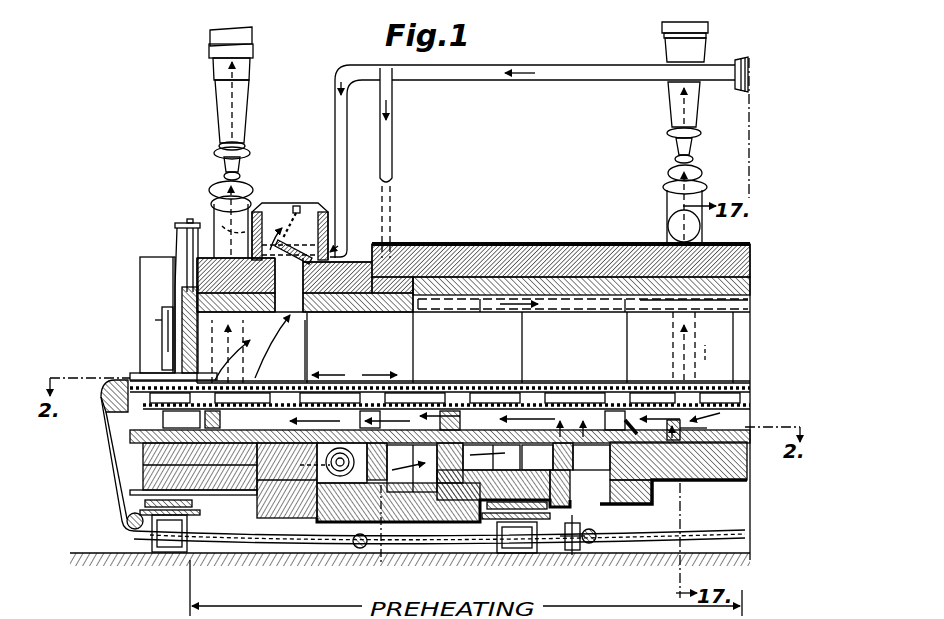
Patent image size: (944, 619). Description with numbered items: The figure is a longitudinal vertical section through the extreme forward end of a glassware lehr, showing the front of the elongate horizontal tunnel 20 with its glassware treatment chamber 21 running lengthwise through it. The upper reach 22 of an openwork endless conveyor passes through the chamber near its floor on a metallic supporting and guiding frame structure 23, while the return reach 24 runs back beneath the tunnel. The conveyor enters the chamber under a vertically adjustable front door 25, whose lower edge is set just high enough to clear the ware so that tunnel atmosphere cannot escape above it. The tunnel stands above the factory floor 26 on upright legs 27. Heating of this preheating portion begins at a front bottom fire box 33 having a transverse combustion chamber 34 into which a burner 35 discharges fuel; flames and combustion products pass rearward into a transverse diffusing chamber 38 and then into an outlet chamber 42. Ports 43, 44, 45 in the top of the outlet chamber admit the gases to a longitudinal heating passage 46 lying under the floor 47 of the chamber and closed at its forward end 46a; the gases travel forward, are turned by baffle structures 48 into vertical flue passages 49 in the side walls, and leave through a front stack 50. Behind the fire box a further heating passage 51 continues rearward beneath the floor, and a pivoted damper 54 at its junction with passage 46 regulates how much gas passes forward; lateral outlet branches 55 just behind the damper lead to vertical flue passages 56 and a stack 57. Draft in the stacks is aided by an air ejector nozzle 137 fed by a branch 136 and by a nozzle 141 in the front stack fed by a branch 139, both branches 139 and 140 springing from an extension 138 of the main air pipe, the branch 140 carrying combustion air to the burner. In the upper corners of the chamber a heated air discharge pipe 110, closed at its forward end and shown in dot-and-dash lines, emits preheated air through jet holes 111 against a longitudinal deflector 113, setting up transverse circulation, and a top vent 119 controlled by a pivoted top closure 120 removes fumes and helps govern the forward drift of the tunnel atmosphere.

The tunnel 20 is at (487, 243).
The glassware treatment chamber 21 is at (520, 330).
The upper reach of the conveyor 22 is at (307, 378).
The conveyor supporting and guiding frame structure 23 is at (440, 392).
The return reach of the conveyor 24 is at (170, 552).
The front door 25 is at (195, 325).
The factory floor 26 is at (710, 560).
The upright legs 27 is at (152, 538).
The front bottom fire box 33 is at (338, 472).
The combustion chamber 34 is at (325, 480).
The burner 35 is at (390, 538).
The transversely extending chamber 38 is at (413, 492).
The outlet chamber 42 is at (575, 552).
The port 43 is at (458, 442).
The port 44 is at (508, 475).
The port 45 is at (570, 460).
The heating passage 46 is at (355, 392).
The closed forward end of the passage 46a is at (125, 428).
The floor of the tunnel chamber 47 is at (615, 410).
The baffle structures 48 is at (243, 390).
The vertical flue passage 49 is at (173, 300).
The front stack 50 is at (240, 120).
The heating passage 51 is at (733, 433).
The pivoted damper 54 is at (632, 438).
The lateral outlet branches 55 is at (673, 437).
The vertical flue passage 56 is at (705, 341).
The stack 57 is at (672, 102).
The heated air discharge pipe 110 is at (748, 308).
The jet holes 111 is at (480, 309).
The deflector 113 is at (740, 318).
The top vent 119 is at (300, 285).
The pivoted top closure 120 is at (300, 238).
The branch pipe 136 is at (737, 238).
The air ejector nozzle 137 is at (672, 238).
The branch pipe 138 is at (557, 72).
The branch pipe 139 is at (340, 72).
The branch pipe 140 is at (388, 118).
The air ejector nozzle 141 is at (212, 212).